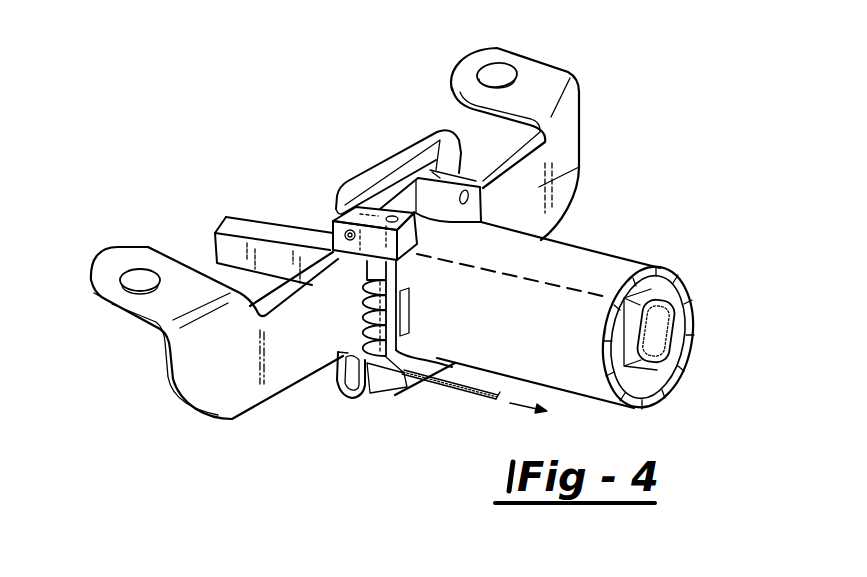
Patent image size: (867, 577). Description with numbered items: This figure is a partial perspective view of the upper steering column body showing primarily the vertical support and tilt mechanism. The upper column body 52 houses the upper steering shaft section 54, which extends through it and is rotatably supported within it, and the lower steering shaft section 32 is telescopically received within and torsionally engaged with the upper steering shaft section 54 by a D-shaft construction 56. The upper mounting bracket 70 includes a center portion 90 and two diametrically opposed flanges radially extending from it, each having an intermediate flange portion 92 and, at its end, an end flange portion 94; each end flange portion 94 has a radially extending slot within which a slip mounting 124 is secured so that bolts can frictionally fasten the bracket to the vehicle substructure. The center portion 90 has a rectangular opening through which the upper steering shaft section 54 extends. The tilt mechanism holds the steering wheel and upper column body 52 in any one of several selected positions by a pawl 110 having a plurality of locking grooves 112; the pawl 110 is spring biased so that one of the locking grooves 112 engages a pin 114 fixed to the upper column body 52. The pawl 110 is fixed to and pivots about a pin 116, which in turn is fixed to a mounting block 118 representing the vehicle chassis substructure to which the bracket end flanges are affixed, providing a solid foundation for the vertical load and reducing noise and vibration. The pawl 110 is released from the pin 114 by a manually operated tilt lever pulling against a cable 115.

The lower steering shaft section 32 is at (247, 215).
The upper column body 52 is at (610, 256).
The upper steering shaft section 54 is at (662, 312).
The D-shaft construction 56 is at (690, 294).
The upper mounting bracket 70 is at (304, 395).
The center portion 90 is at (392, 157).
The intermediate flange portion 92 is at (580, 165).
The end flange portion 94 is at (150, 246).
The pawl 110 is at (413, 374).
The locking grooves 112 is at (364, 293).
The pin 114 is at (373, 392).
The cable 115 is at (487, 401).
The pin 116 is at (333, 224).
The mounting block 118 is at (443, 180).
The slip mounting 124 is at (117, 305).